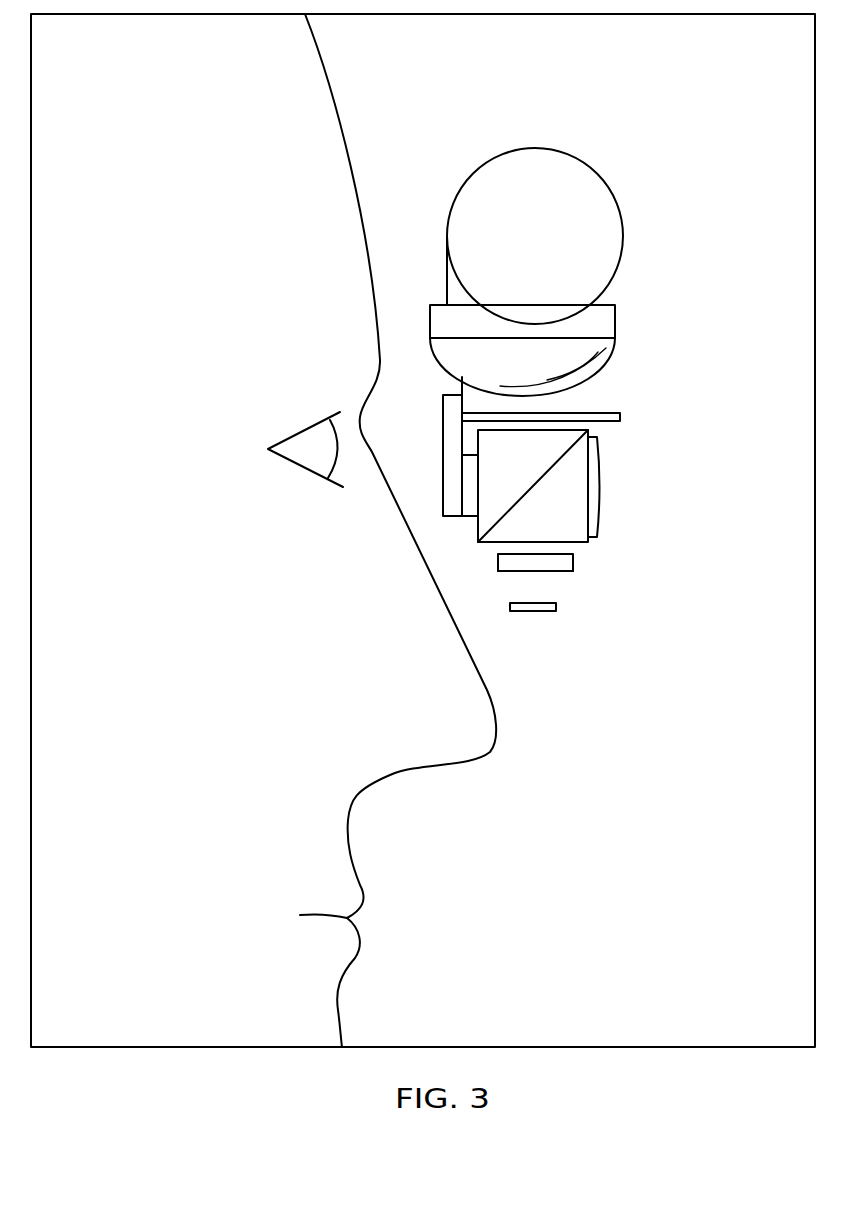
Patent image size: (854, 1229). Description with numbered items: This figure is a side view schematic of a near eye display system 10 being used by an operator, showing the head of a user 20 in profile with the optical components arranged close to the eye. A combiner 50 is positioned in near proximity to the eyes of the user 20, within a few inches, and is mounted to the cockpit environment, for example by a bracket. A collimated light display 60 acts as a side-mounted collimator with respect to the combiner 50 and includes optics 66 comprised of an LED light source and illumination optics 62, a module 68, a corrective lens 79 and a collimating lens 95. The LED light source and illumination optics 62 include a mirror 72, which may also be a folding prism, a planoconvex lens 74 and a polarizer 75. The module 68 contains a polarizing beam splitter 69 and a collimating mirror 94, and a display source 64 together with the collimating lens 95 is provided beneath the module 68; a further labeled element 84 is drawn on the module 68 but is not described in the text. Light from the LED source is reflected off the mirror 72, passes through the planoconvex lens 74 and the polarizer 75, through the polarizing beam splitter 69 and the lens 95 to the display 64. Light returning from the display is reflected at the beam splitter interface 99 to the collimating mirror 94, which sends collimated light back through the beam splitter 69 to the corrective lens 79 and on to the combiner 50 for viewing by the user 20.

The near eye display system 10 is at (558, 68).
The user 20 is at (241, 158).
The combiner 50 is at (448, 415).
The collimated light display 60 is at (464, 143).
The LED light source and illumination optics 62 is at (616, 171).
The display source 64 is at (547, 612).
The optics 66 is at (588, 121).
The module 68 is at (580, 472).
The polarizing beam splitter 69 is at (573, 536).
The mirror 72 is at (622, 230).
The planoconvex lens 74 is at (615, 313).
The polarizer 75 is at (620, 418).
The corrective lens 79 is at (460, 467).
The beam splitter surface 84 is at (580, 525).
The collimating mirror 94 is at (597, 497).
The collimating lens 95 is at (567, 560).
The beam splitter interface 99 is at (488, 526).